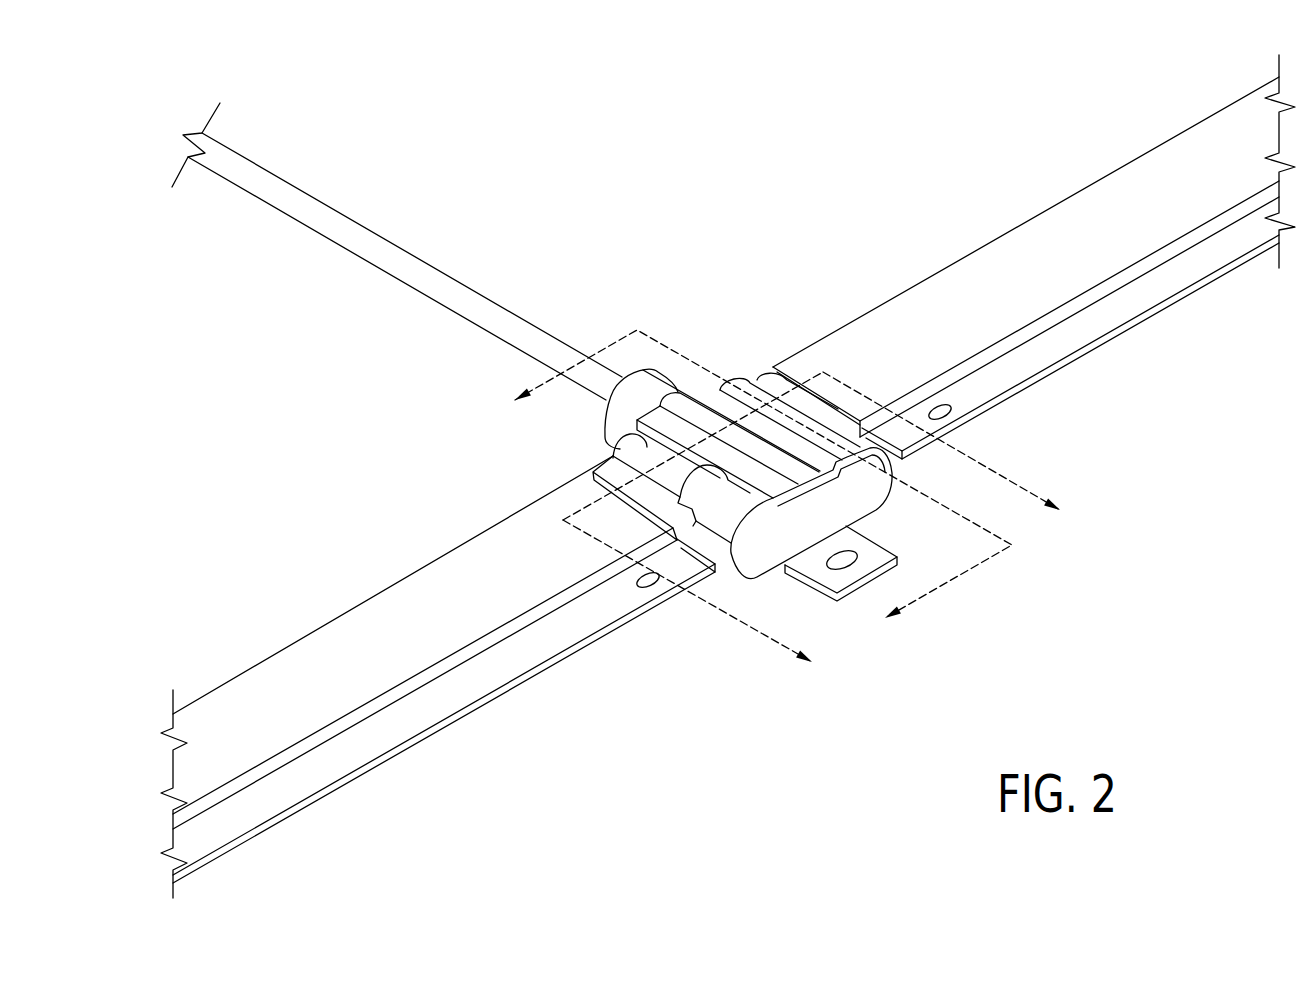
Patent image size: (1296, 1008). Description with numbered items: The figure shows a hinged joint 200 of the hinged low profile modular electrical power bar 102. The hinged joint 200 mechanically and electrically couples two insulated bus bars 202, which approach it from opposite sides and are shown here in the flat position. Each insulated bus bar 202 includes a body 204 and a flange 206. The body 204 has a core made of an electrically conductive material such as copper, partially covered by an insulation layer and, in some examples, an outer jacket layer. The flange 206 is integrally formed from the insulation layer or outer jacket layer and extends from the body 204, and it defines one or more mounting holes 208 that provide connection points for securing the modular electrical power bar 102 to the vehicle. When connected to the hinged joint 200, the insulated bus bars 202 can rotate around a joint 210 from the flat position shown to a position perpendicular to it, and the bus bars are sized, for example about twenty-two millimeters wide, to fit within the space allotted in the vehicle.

The modular electrical power bar 102 is at (866, 126).
The hinged joint 200 is at (722, 477).
The insulated bus bar 202 is at (728, 476).
The body 204 is at (910, 308).
The flange 206 is at (726, 559).
The mounting hole 208 is at (956, 413).
The joint 210 is at (779, 404).